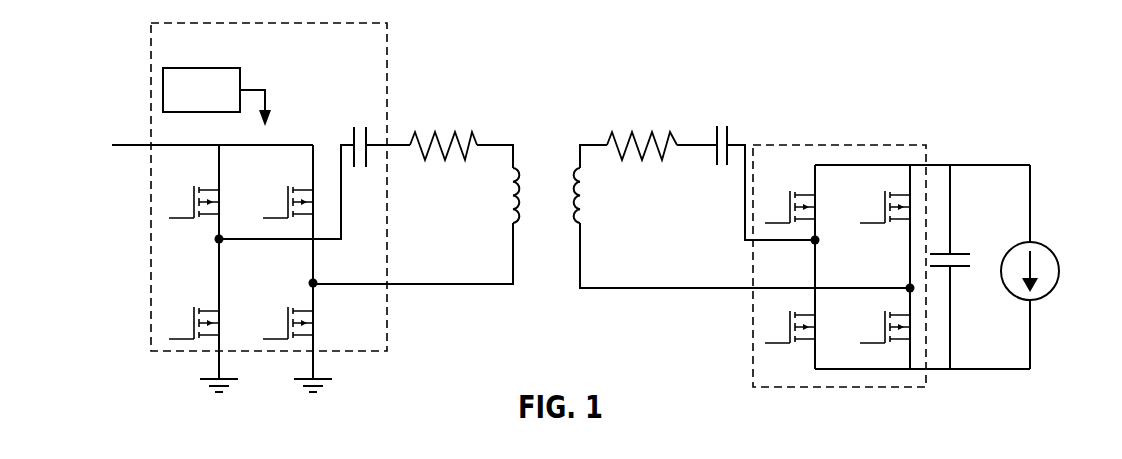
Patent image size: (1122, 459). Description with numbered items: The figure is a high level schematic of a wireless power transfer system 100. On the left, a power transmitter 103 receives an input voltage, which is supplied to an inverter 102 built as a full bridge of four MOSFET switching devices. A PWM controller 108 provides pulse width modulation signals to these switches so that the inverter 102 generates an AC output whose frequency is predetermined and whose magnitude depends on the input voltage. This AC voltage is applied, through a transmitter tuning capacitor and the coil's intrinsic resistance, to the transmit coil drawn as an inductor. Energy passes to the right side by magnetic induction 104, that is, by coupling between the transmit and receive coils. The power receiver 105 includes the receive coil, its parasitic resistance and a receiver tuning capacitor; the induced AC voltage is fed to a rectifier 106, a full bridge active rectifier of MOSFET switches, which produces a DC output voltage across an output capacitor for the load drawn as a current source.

The wireless power transfer system 100 is at (560, 208).
The inverter 102 is at (245, 208).
The power transmitter 103 is at (289, 208).
The magnetic induction 104 is at (541, 302).
The power receiver 105 is at (660, 342).
The rectifier 106 is at (753, 351).
The PWM controller 108 is at (207, 68).